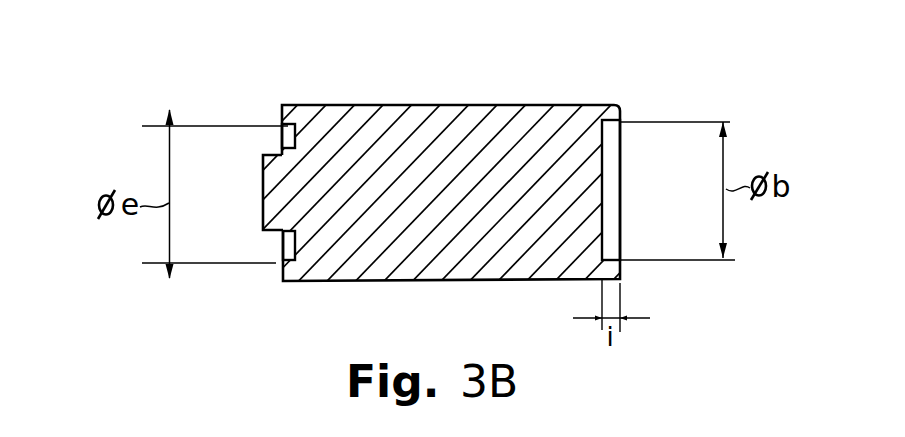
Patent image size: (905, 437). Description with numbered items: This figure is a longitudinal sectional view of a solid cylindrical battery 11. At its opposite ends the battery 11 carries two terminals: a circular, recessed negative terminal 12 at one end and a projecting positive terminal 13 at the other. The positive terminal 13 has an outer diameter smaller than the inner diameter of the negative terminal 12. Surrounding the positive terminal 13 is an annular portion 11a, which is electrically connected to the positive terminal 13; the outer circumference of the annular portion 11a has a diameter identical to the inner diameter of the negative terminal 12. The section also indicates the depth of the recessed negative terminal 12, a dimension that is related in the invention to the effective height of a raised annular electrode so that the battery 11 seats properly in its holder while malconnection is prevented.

The battery 11 is at (529, 94).
The annular portion 11a is at (282, 143).
The negative terminal 12 is at (605, 190).
The positive terminal 13 is at (263, 196).